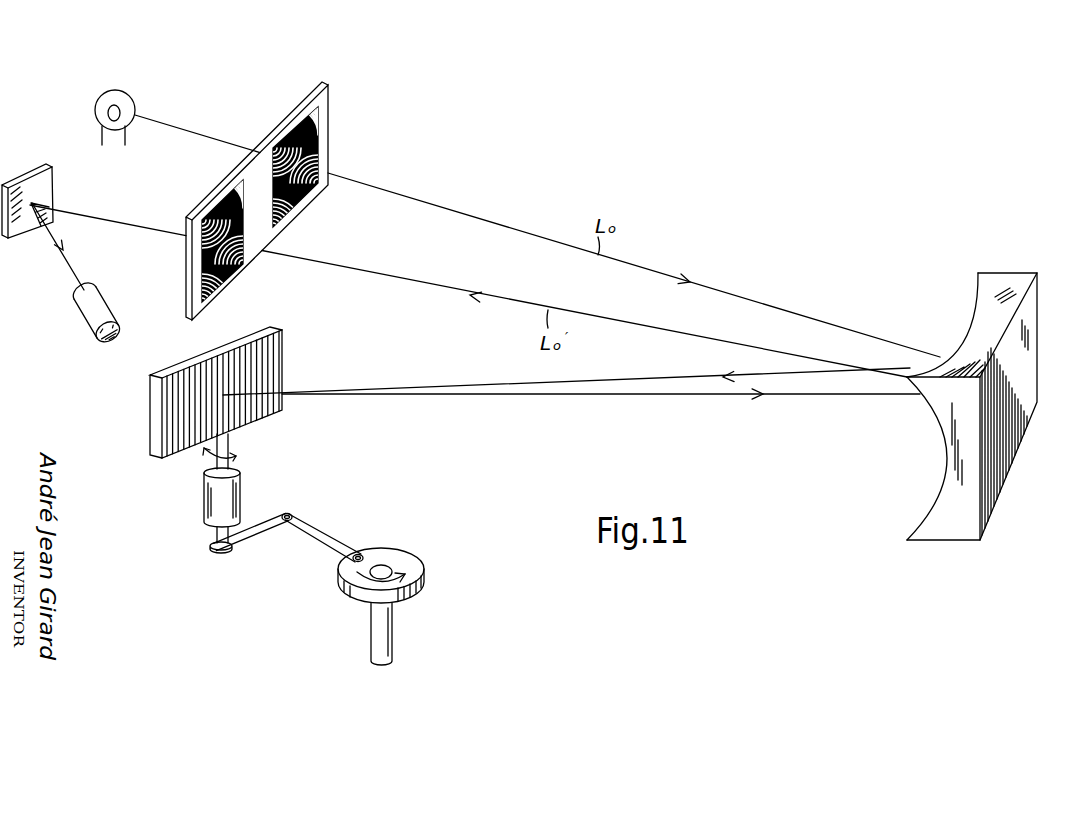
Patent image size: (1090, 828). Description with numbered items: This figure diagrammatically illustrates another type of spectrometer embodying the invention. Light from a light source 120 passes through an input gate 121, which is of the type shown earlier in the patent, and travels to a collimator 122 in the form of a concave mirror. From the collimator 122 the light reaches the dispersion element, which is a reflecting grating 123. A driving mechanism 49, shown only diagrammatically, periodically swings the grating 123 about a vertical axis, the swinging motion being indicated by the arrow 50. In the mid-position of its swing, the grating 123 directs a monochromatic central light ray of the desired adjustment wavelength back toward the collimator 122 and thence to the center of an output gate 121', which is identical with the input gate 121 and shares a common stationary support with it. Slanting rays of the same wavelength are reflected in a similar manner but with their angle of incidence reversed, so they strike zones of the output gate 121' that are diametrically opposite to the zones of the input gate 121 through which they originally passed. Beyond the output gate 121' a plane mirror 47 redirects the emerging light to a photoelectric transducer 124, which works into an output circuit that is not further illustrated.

The light source 120 is at (110, 92).
The plane mirror 47 is at (33, 168).
The photoelectric transducer 124 is at (78, 323).
The input gate 121 is at (288, 201).
The output gate 121' is at (252, 242).
The collimator 122 is at (1005, 282).
The reflecting grating 123 is at (150, 423).
The arrow 50 is at (207, 450).
The driving mechanism 49 is at (405, 547).